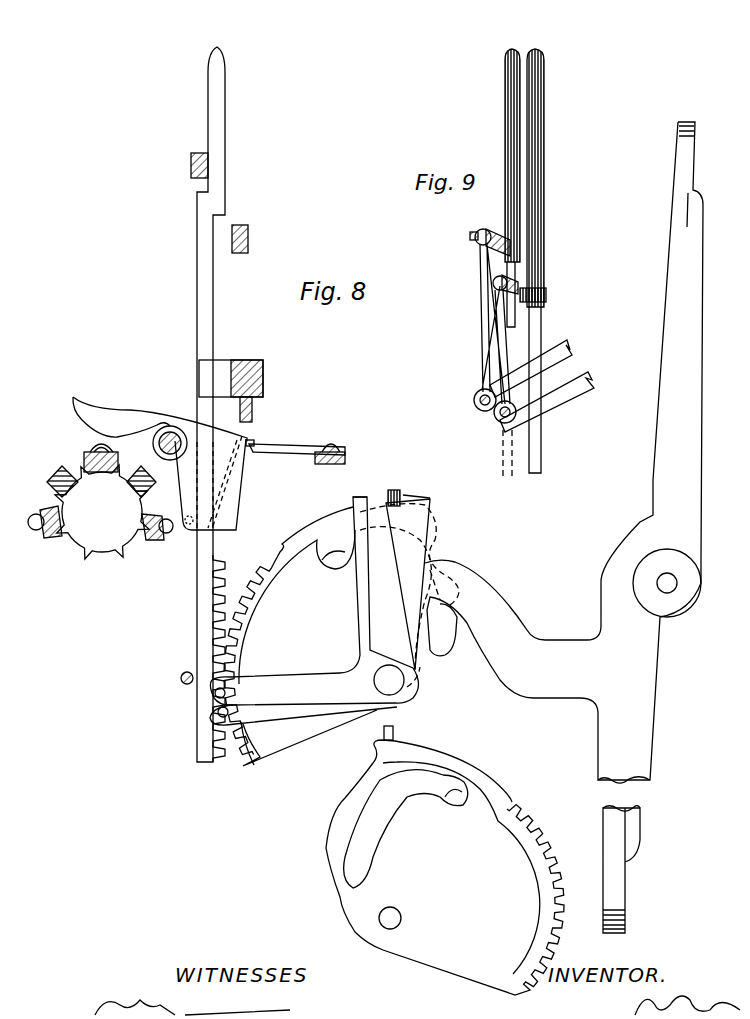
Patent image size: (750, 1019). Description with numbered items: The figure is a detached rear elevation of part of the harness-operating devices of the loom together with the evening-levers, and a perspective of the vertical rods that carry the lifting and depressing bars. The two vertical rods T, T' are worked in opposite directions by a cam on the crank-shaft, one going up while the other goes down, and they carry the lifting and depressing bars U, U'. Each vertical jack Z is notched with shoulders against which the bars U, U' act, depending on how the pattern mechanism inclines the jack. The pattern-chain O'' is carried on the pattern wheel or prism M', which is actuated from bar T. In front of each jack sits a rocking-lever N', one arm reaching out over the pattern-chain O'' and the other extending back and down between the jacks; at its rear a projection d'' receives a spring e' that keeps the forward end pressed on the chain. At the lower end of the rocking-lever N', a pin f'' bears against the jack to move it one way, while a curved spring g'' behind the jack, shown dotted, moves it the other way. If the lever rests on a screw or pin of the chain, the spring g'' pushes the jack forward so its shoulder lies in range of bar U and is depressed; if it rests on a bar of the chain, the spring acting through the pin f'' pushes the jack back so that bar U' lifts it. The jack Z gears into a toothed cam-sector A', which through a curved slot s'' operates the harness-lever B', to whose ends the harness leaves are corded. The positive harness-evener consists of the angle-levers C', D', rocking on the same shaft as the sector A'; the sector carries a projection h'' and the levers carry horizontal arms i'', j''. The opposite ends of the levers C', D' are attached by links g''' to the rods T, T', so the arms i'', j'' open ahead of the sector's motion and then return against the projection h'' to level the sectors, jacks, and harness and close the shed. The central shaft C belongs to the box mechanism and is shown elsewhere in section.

In FIG. 8, the vertical jack Z is at (186, 612).
In FIG. 8, the lifting and depressing bar U is at (183, 159).
In FIG. 8, the lifting and depressing bar U' is at (259, 237).
In FIG. 8, the rocking-lever N' is at (160, 420).
In FIG. 8, the pattern wheel or prism M' is at (102, 512).
In FIG. 8, the pattern-chain O'' is at (100, 490).
In FIG. 8, the pin f'' is at (210, 484).
In FIG. 8, the curved spring g'' is at (225, 482).
In FIG. 8, the projection d'' is at (295, 439).
In FIG. 8, the spring e' is at (319, 446).
In FIG. 8, the toothed cam-sector A' is at (394, 751).
In FIG. 8, the curved slot s'' is at (392, 672).
In FIG. 8, the angle-lever C' is at (314, 631).
In FIG. 8, the angle-lever D' is at (409, 584).
In FIG. 9, the angle-lever D' is at (532, 357).
In FIG. 8, the horizontal arm i'' is at (359, 487).
In FIG. 8, the horizontal arm j'' is at (418, 487).
In FIG. 8, the projection h'' is at (400, 611).
In FIG. 8, the harness-lever B' is at (555, 527).
In FIG. 9, the vertical rod T is at (498, 263).
In FIG. 9, the vertical rod T' is at (544, 261).
In FIG. 9, the link g''' is at (483, 326).
In FIG. 9, the central shaft C is at (547, 402).